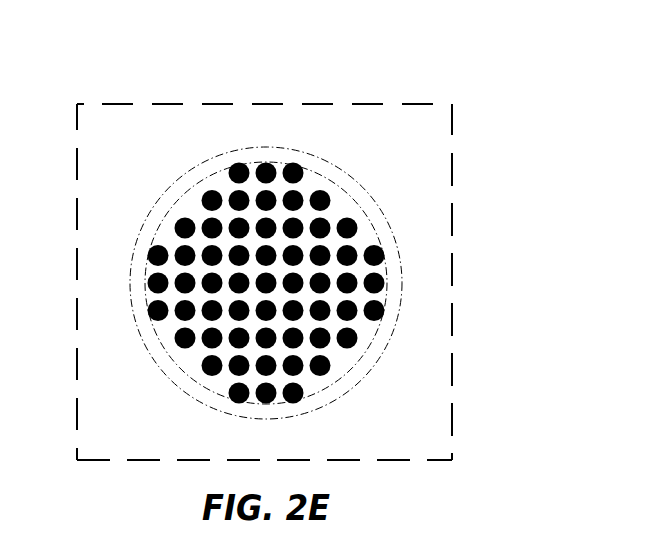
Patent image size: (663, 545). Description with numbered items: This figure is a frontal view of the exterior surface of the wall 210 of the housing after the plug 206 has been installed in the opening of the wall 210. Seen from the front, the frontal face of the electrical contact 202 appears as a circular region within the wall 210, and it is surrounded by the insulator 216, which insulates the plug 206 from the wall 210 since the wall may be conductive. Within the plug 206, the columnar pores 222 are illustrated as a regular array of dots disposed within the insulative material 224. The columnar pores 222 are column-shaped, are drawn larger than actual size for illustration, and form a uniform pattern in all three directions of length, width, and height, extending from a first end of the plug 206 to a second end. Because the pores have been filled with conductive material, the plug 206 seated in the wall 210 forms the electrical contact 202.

The electrical contact 202 is at (297, 50).
The plug 206 is at (192, 148).
The wall 210 is at (418, 448).
The insulator 216 is at (318, 170).
The columnar pores 222 is at (346, 228).
The insulative material 224 is at (348, 362).